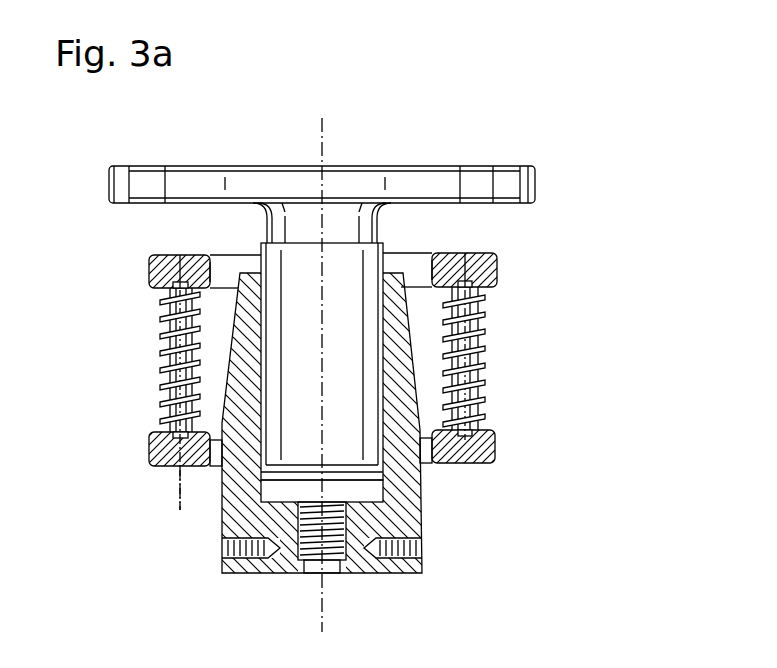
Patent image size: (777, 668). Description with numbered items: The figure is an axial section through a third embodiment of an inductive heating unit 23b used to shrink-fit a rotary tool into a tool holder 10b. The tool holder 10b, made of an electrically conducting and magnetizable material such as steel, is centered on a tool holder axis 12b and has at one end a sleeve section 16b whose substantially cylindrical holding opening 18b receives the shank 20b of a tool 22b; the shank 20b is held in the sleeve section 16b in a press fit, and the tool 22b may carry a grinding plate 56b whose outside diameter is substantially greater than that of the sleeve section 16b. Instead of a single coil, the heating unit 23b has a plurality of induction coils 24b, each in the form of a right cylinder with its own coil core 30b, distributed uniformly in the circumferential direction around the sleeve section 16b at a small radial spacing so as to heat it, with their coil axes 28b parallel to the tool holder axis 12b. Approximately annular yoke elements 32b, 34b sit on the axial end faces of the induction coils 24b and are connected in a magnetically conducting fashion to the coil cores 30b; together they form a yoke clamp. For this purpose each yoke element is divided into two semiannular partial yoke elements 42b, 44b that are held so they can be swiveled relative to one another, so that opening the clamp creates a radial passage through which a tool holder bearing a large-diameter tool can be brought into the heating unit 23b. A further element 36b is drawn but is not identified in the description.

The tool holder 10b is at (488, 549).
The tool holder axis 12b is at (322, 615).
The sleeve section 16b is at (400, 361).
The holding opening 18b is at (263, 307).
The shank 20b is at (350, 273).
The tool 22b is at (440, 152).
The heating unit 23b is at (132, 377).
The induction coil 24b is at (160, 343).
The coil axis 28b is at (160, 410).
The coil core 30b is at (160, 316).
The yoke element 32b is at (176, 470).
The yoke element 34b is at (165, 255).
The groove 36b is at (213, 283).
The partial yoke element 42b is at (147, 268).
The partial yoke element 44b is at (497, 258).
The grinding plate 56b is at (523, 178).